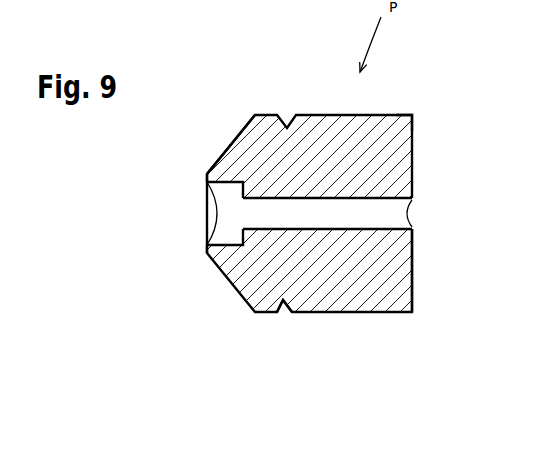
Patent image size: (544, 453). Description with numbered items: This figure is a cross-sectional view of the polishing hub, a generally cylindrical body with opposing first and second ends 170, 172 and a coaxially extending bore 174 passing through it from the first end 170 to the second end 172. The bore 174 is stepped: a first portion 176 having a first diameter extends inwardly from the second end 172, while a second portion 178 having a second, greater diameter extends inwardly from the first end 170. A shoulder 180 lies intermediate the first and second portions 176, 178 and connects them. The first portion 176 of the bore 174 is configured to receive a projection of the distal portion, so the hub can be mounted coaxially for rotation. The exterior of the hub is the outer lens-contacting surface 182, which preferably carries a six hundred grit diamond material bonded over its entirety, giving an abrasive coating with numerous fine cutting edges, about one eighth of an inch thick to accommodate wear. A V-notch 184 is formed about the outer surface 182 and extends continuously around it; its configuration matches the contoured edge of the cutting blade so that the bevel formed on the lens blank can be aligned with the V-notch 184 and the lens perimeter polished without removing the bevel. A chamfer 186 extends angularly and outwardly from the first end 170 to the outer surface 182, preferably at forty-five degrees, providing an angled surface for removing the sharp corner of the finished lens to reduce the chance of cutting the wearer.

The first end 170 is at (205, 213).
The second end 172 is at (413, 272).
The bore 174 is at (332, 195).
The first portion 176 is at (383, 210).
The second portion 178 is at (232, 228).
The shoulder 180 is at (242, 193).
The outer lens-contacting surface 182 is at (398, 113).
The V-notch 184 is at (283, 313).
The chamfer 186 is at (230, 137).